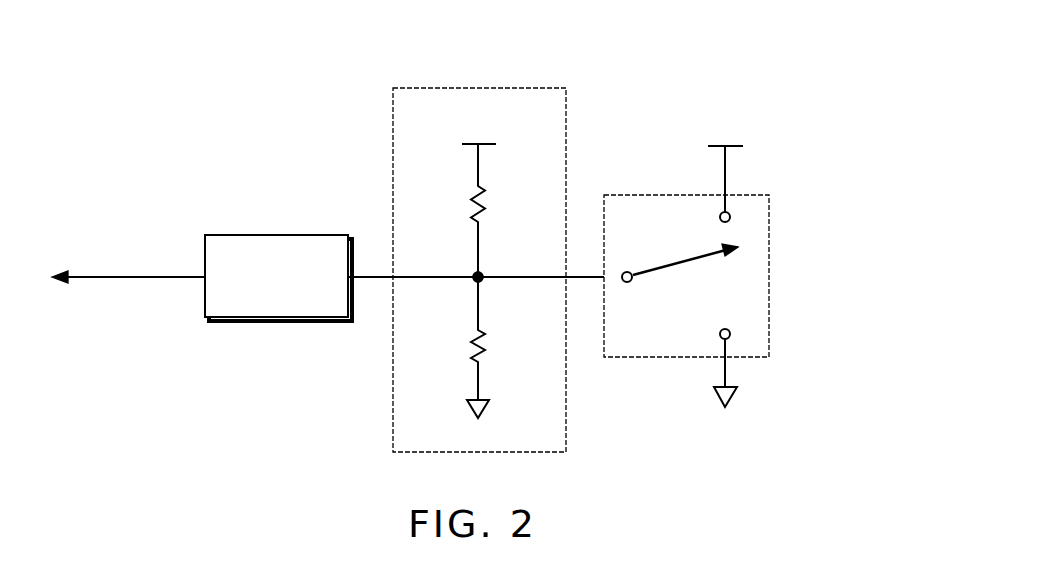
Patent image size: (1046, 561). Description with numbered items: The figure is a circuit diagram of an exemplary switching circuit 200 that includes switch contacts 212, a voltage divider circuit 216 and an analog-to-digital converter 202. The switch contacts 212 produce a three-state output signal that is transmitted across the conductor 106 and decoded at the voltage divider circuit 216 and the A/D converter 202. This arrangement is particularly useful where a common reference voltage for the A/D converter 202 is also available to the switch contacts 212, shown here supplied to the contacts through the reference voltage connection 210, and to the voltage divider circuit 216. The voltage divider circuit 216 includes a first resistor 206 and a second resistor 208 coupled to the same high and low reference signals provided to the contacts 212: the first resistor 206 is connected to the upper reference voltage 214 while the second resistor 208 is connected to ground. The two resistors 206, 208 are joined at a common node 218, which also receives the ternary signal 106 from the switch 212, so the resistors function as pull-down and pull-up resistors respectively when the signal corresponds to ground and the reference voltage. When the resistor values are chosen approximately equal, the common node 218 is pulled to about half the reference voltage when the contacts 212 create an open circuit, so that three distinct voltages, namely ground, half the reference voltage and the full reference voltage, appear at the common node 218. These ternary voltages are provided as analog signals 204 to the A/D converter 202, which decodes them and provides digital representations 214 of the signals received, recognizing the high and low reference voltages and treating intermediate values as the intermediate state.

The switching circuit 200 is at (652, 52).
The analog-to-digital converter 202 is at (315, 235).
The analog signals 204 is at (420, 282).
The first resistor 206 is at (487, 198).
The second resistor 208 is at (481, 350).
The conductor 106 is at (492, 282).
The reference voltage supply 210 is at (728, 160).
The switch contacts 212 is at (769, 282).
The reference voltage Vref 214 is at (150, 273).
The voltage divider circuit 216 is at (534, 452).
The common node 218 is at (476, 272).